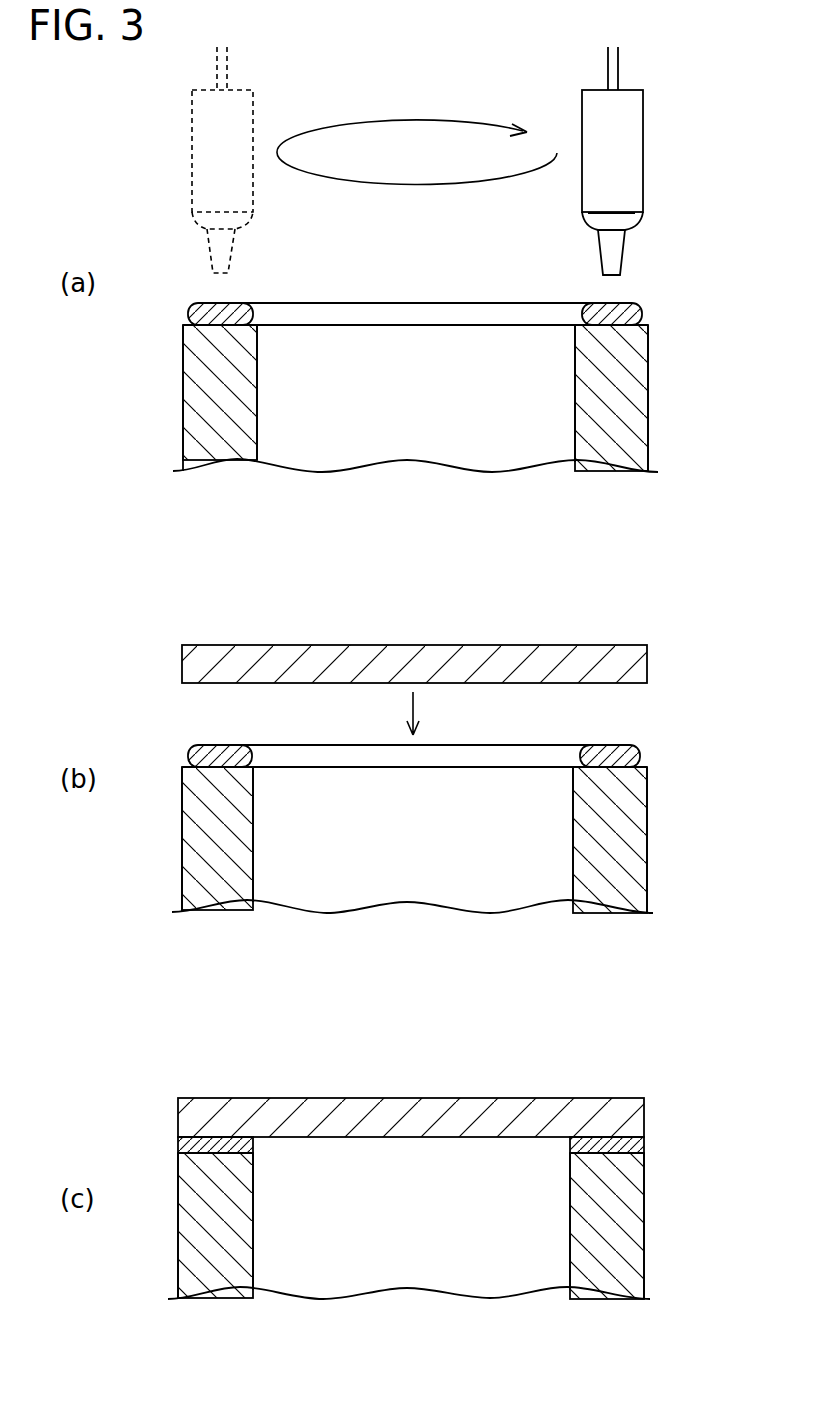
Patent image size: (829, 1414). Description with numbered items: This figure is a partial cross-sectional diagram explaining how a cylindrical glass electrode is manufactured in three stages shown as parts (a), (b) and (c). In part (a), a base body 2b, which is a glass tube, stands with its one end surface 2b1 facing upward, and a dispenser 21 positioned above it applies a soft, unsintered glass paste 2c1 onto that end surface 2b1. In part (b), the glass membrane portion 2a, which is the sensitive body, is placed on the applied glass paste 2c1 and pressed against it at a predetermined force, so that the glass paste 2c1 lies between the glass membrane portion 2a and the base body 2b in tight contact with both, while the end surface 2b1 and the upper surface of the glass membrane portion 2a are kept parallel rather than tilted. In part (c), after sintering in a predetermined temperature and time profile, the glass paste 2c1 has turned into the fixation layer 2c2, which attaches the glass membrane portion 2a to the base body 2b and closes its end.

The dispenser 21 is at (643, 153).
The glass membrane portion 2a is at (647, 660).
The base body 2b is at (648, 400).
The end surface 2b1 is at (188, 312).
The glass paste 2c1 is at (642, 310).
The fixation layer 2c2 is at (644, 1143).